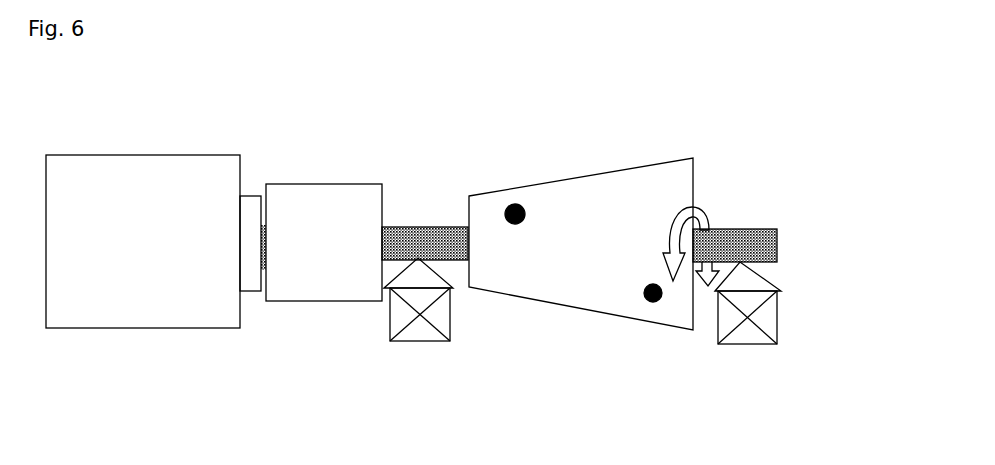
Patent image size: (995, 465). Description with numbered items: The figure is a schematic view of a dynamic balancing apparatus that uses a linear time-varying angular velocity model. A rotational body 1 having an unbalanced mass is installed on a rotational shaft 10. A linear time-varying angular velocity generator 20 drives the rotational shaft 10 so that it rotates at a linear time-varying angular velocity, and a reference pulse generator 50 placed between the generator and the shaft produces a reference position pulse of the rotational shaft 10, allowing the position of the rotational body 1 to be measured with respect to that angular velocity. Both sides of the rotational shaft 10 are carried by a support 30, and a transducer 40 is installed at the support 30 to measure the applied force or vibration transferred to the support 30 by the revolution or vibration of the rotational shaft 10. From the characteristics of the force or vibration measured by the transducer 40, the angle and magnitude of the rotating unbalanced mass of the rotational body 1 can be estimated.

The rotational body 1 is at (674, 178).
The rotational shaft 10 is at (745, 247).
The linear time-varying angular velocity generator 20 is at (140, 173).
The support 30 is at (612, 347).
The transducer 40 is at (412, 334).
The reference pulse generator 50 is at (330, 197).